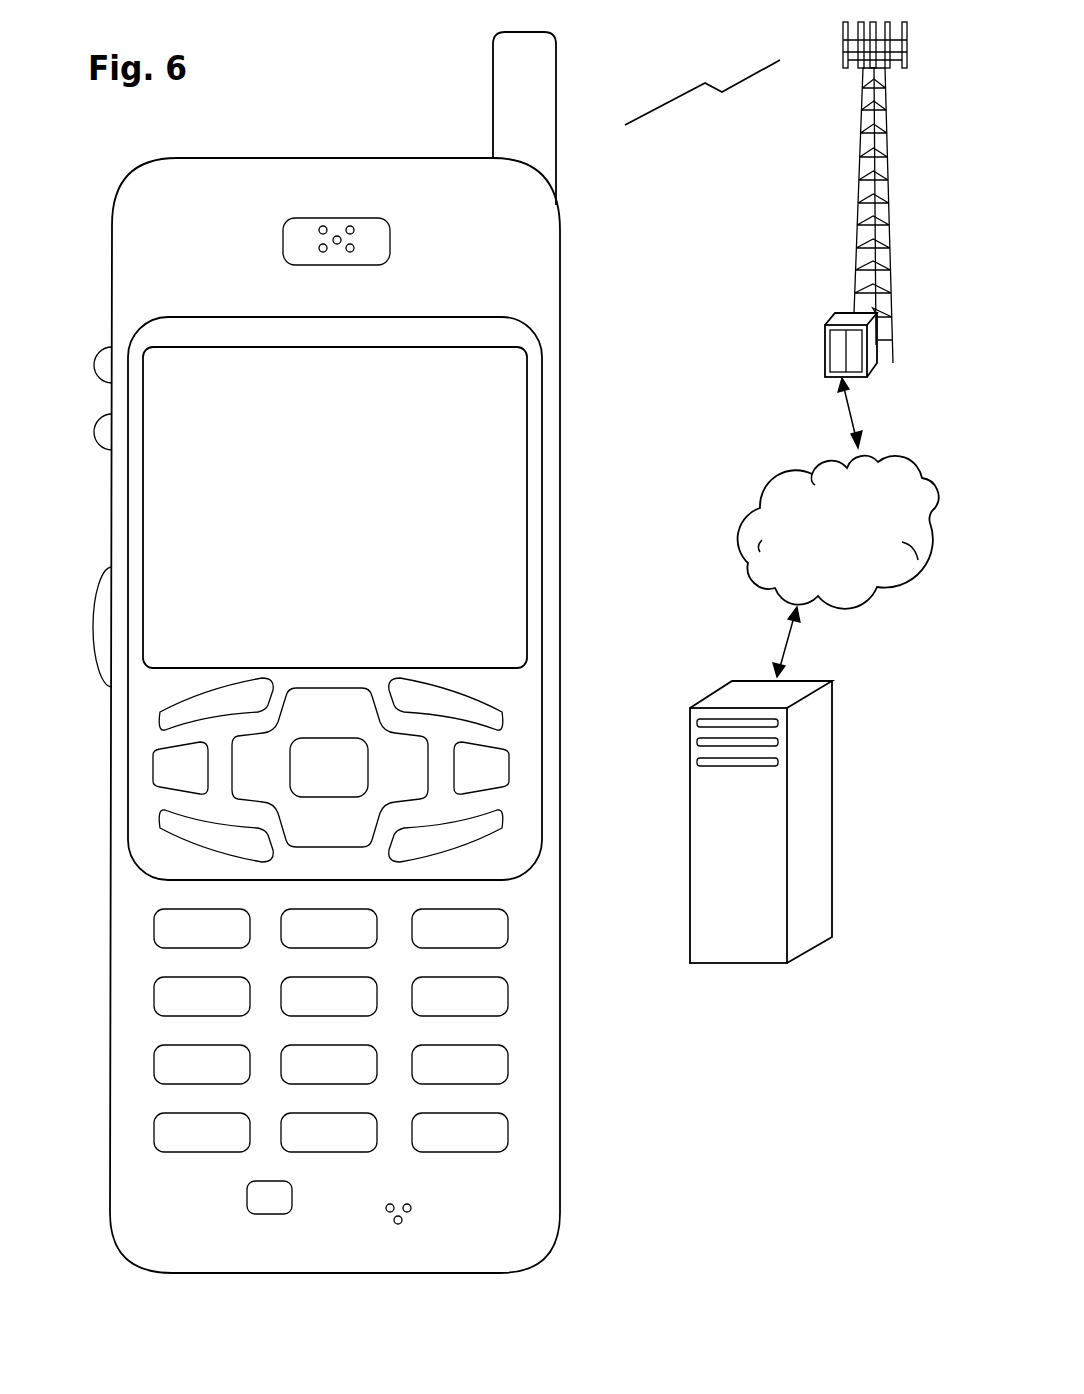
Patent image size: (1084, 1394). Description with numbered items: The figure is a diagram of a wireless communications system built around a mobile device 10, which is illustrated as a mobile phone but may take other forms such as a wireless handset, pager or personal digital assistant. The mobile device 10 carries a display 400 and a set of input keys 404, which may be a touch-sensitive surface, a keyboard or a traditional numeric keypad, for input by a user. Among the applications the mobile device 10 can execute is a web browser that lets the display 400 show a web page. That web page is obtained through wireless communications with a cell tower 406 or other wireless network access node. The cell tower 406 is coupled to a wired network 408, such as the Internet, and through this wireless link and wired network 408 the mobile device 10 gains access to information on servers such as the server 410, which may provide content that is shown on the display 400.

The mobile device 10 is at (152, 1271).
The display 400 is at (530, 361).
The input keys 404 is at (568, 678).
The cell tower 406 is at (858, 213).
The wired network 408 is at (757, 586).
The server 410 is at (738, 966).